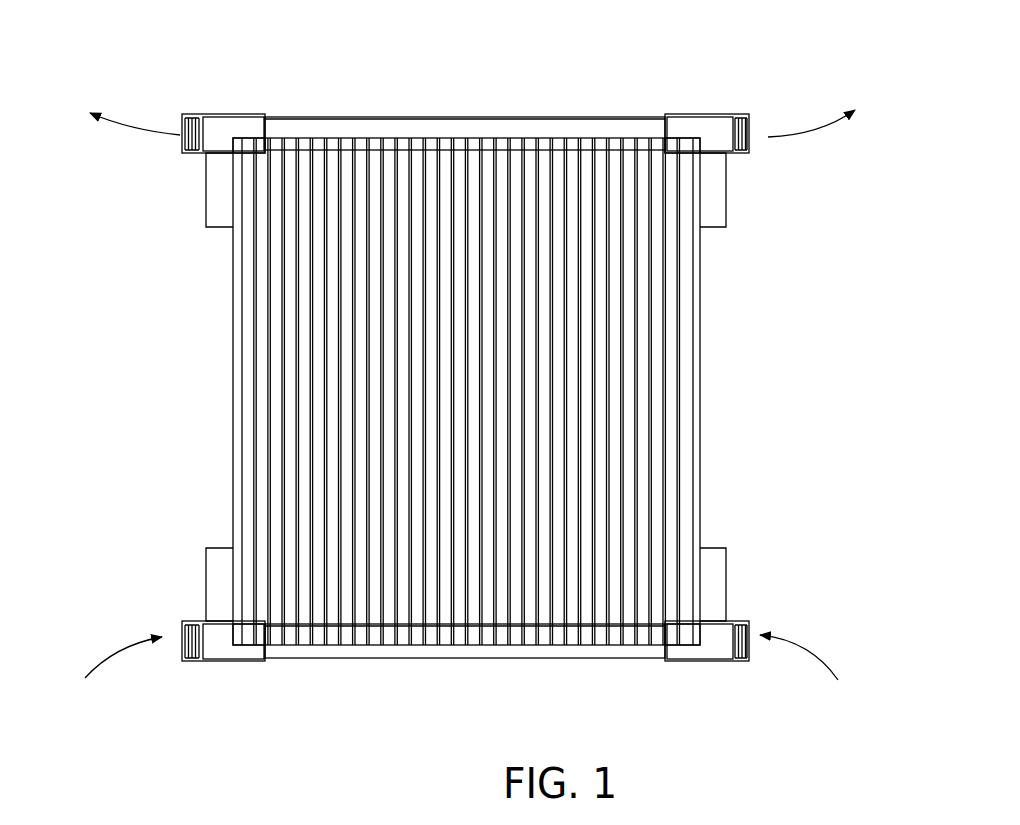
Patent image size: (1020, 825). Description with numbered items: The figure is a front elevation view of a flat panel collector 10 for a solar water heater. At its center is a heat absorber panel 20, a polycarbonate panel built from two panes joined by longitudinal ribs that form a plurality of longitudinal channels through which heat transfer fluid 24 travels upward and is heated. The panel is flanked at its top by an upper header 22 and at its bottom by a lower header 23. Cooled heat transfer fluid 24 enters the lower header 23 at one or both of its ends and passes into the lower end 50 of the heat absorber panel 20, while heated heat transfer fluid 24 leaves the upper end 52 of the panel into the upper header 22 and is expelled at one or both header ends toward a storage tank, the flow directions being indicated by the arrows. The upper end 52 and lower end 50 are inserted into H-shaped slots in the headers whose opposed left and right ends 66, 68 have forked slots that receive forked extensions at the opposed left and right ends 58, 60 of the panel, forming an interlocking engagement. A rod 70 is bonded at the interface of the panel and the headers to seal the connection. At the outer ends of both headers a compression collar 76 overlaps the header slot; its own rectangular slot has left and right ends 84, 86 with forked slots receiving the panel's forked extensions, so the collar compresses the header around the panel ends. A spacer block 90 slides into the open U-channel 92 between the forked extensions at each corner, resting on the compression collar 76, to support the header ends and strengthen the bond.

The flat panel collector 10 is at (463, 391).
The heat absorber panel 20 is at (539, 435).
The upper header 22 is at (489, 86).
The lower header 23 is at (465, 687).
The heat transfer fluid 24 is at (123, 132).
The lower end 50 is at (608, 647).
The upper end 52 is at (617, 150).
The left end 58 is at (265, 389).
The right end 60 is at (734, 409).
The left end of rectangular slot 66 is at (265, 389).
The right end of rectangular slot 68 is at (734, 409).
The rod 70 is at (417, 627).
The compression collar 76 is at (183, 118).
The left end of collar rectangular slot 84 is at (245, 132).
The right end of collar rectangular slot 86 is at (695, 138).
The spacer block 90 is at (213, 208).
The open U-channel 92 is at (412, 818).